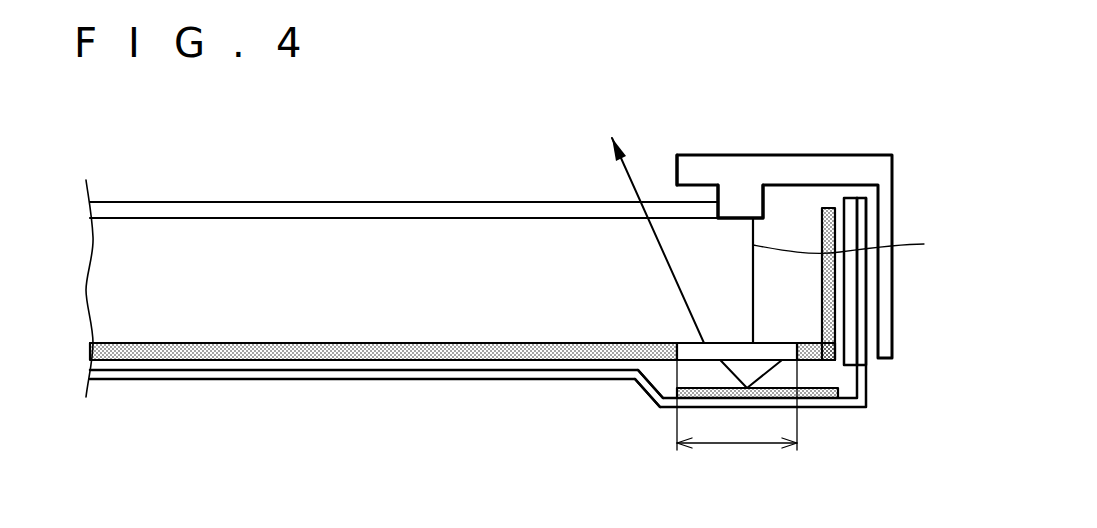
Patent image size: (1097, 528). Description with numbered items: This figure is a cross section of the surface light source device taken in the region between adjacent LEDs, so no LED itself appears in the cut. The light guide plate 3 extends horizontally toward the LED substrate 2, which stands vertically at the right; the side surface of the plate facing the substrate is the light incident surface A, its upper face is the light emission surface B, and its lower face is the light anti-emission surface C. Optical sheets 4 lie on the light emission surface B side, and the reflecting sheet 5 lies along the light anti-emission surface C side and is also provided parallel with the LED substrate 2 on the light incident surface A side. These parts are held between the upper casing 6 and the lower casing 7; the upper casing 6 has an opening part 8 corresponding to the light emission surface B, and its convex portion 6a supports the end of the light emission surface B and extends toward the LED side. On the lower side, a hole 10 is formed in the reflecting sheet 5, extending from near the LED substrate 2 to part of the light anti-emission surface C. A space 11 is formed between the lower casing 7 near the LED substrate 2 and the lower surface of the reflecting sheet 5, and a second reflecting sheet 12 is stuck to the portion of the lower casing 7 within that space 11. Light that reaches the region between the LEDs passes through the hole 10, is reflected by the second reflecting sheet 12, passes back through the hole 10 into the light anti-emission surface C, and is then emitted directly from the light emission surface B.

The LED substrate 2 is at (852, 360).
The light guide plate 3 is at (517, 240).
The optical sheets 4 is at (342, 212).
The reflecting sheet 5 is at (283, 350).
The upper casing 6 is at (800, 170).
The convex portion 6a is at (742, 195).
The lower casing 7 is at (468, 375).
The opening part 8 is at (675, 170).
The hole 10 is at (728, 345).
The space 11 is at (652, 375).
The second reflecting sheet 12 is at (825, 400).
The light incident surface A is at (848, 243).
The light emission surface B is at (437, 218).
The light anti-emission surface C is at (388, 345).